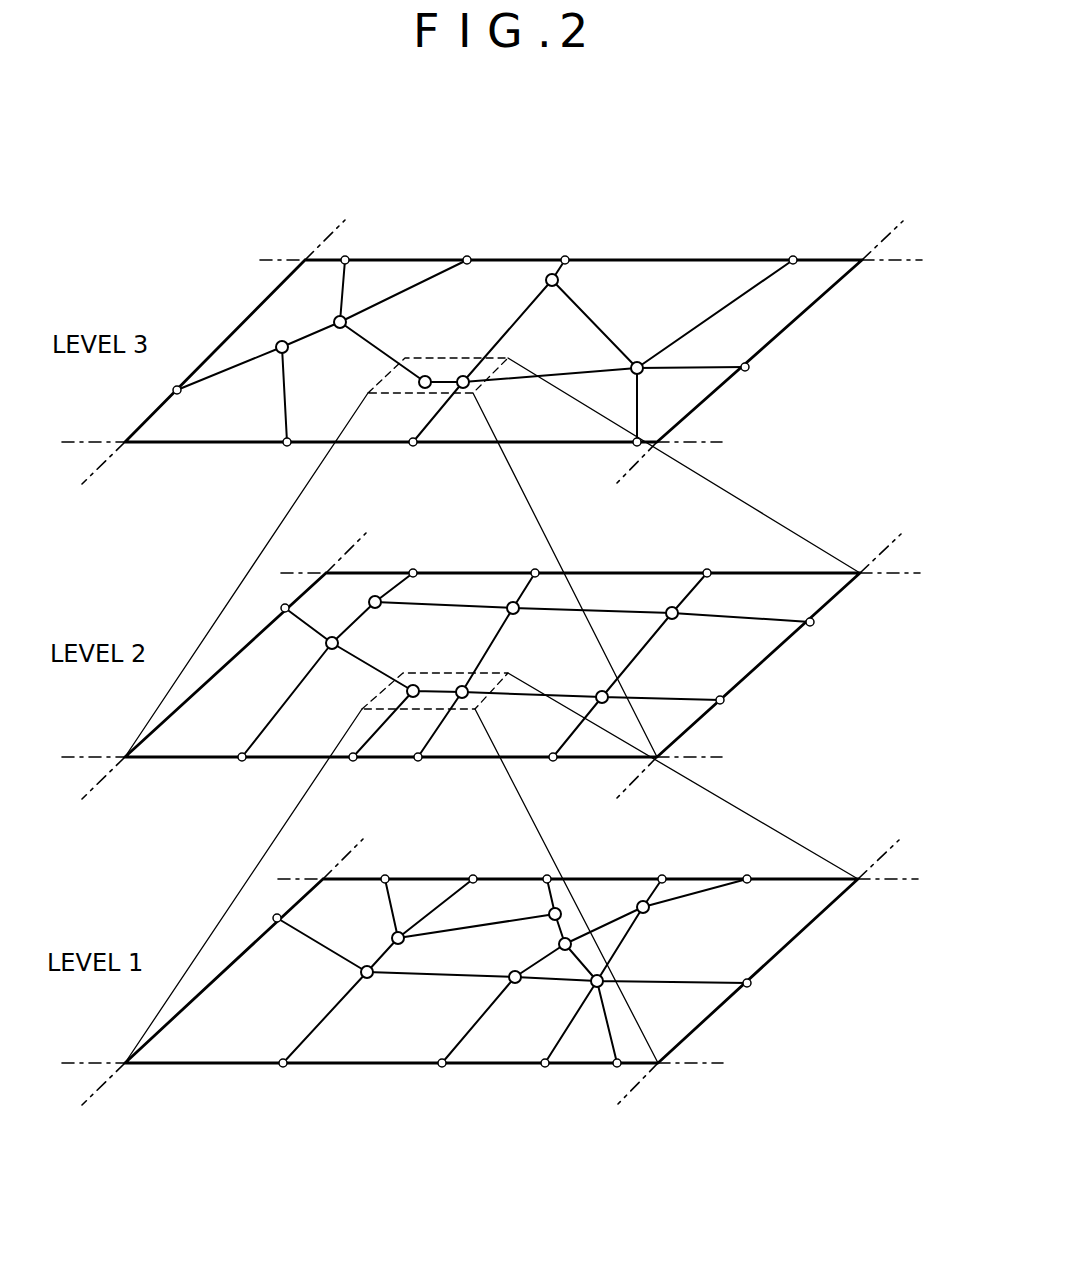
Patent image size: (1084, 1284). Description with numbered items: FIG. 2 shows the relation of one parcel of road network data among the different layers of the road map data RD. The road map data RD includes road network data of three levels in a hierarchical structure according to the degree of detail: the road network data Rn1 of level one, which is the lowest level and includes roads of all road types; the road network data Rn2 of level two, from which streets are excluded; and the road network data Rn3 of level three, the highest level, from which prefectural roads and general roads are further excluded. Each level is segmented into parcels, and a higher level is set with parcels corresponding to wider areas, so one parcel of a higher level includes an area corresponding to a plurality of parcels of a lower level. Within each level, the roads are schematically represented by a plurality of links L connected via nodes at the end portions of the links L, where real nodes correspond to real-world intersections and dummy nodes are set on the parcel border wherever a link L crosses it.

The road map data RD is at (206, 275).
The road network data of level 3 Rn3 is at (703, 400).
The road network data of level 2 Rn2 is at (703, 717).
The road network data of level 1 Rn1 is at (717, 1010).
The link L is at (688, 330).